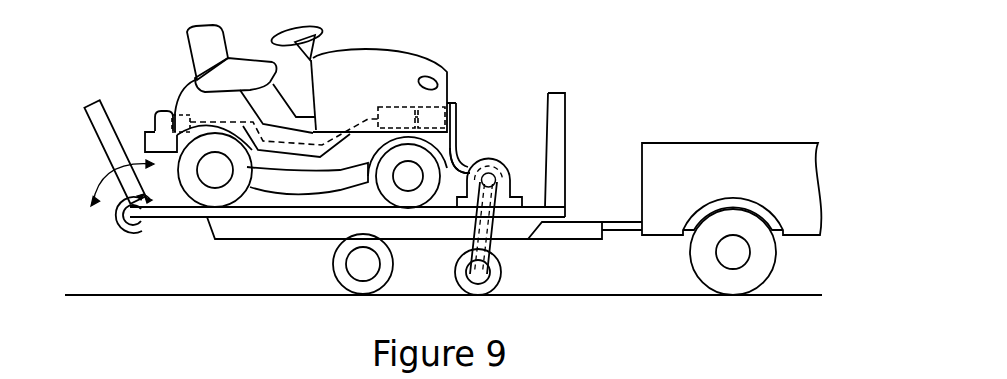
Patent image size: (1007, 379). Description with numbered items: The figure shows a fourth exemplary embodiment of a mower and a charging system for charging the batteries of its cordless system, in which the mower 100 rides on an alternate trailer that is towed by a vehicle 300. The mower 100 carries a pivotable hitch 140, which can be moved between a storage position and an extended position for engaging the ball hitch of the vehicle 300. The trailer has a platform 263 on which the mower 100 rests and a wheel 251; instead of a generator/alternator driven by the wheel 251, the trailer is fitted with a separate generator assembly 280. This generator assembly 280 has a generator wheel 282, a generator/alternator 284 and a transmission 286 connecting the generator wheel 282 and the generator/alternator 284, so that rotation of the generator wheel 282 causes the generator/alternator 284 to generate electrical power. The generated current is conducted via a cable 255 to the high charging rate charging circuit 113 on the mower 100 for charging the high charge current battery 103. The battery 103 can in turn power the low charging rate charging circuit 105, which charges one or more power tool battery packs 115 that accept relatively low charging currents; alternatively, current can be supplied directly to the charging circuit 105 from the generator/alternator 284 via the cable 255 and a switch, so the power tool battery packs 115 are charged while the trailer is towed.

The mower 100 is at (337, 72).
The high charge current battery 103 is at (388, 107).
The low charging rate charging circuit 105 is at (180, 114).
The high charging rate charging circuit 113 is at (428, 108).
The power tool battery packs 115 is at (158, 118).
The pivotable hitch 140 is at (452, 110).
The wheel 251 is at (338, 270).
The cable 255 is at (460, 150).
The platform 263 is at (207, 213).
The generator assembly 280 is at (502, 145).
The generator wheel 282 is at (490, 272).
The generator/alternator 284 is at (508, 178).
The transmission 286 is at (493, 224).
The vehicle 300 is at (690, 162).